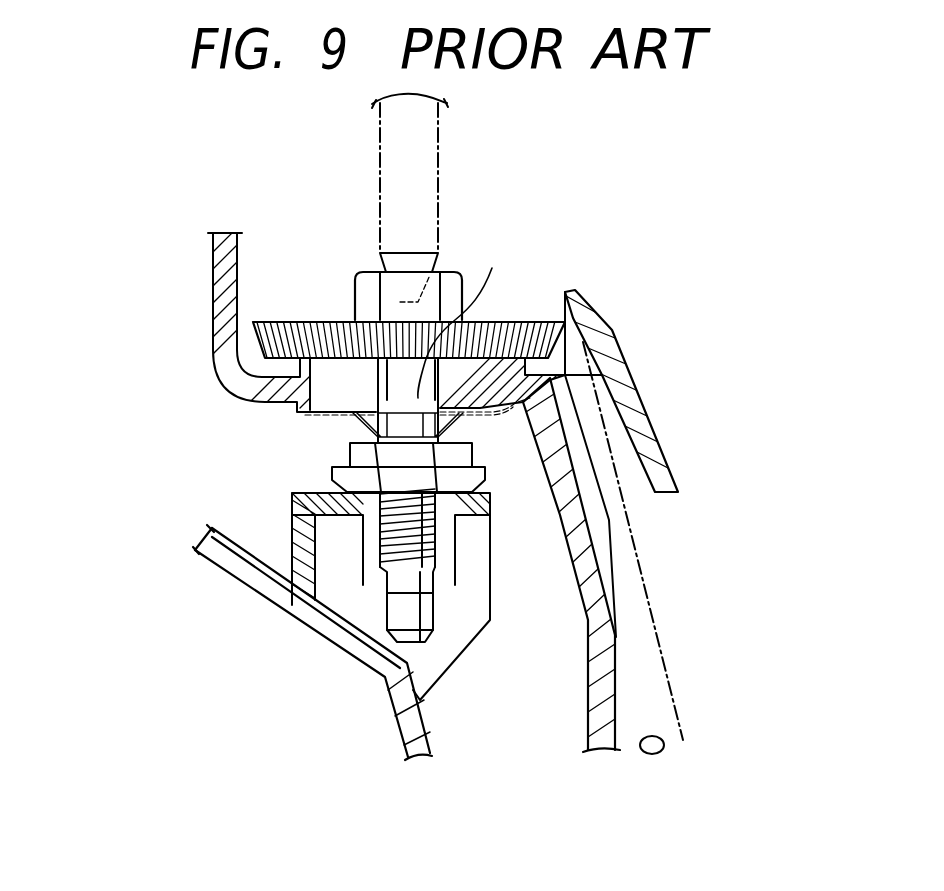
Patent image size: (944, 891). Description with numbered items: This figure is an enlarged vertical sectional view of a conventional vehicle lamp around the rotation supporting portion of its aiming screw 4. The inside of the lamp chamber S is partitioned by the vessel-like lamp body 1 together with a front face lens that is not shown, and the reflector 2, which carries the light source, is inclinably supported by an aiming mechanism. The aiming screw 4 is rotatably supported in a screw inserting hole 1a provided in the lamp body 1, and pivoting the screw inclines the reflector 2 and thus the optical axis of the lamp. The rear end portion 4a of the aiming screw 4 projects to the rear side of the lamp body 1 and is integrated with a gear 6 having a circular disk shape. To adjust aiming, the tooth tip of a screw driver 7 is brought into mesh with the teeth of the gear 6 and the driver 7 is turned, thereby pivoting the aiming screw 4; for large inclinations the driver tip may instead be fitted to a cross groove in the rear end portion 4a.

The lamp body 1 is at (592, 542).
The screw inserting hole 1a is at (492, 268).
The reflector 2 is at (343, 650).
The aiming screw 4 is at (383, 523).
The rear end portion of the aiming screw 4a is at (355, 290).
The gear 6 is at (278, 320).
The screw driver 7 is at (440, 155).
The lamp chamber S is at (535, 601).